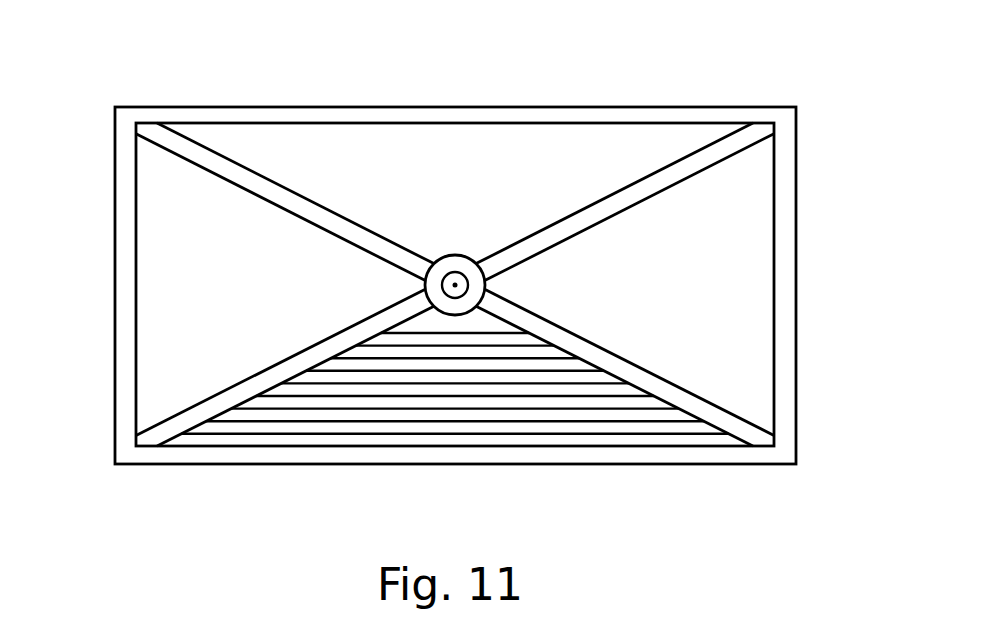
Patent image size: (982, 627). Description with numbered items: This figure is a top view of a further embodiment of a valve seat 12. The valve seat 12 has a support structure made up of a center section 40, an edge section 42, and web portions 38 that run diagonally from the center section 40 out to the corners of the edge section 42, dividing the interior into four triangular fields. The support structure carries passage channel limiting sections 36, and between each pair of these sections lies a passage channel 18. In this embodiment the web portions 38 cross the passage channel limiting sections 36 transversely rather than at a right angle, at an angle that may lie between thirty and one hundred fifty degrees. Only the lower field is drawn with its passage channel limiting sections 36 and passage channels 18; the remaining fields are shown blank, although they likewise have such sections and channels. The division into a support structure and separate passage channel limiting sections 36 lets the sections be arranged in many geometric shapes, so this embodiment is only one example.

The valve seat 12 is at (803, 92).
The passage channel 18 is at (423, 340).
The passage channel limiting sections 36 is at (548, 352).
The web portions 38 is at (657, 188).
The center section 40 is at (453, 270).
The edge section 42 is at (330, 117).